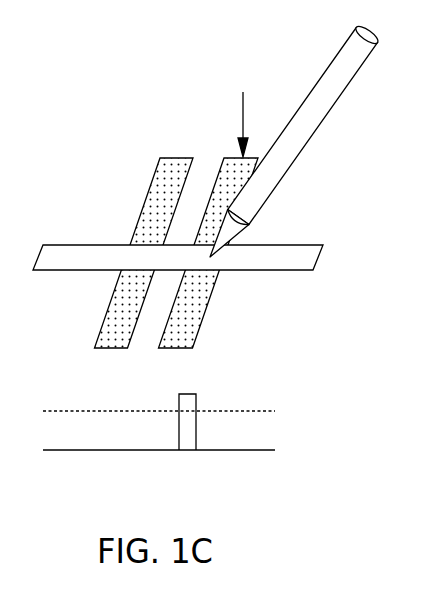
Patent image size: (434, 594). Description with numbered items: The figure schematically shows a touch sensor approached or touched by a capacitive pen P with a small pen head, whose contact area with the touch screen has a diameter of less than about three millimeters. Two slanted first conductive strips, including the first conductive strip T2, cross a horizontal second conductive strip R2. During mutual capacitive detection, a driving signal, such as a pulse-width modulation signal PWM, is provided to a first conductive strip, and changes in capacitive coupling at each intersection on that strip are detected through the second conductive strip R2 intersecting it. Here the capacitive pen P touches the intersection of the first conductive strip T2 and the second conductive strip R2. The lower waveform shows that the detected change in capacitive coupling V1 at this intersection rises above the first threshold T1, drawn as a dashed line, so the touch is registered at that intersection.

The first threshold T1 is at (163, 173).
The first conductive strip T2 is at (233, 170).
The second conductive strip R2 is at (300, 252).
The capacitive pen P is at (322, 88).
The pulse-width modulation signal PWM is at (245, 113).
The change in capacitive coupling V1 is at (159, 438).